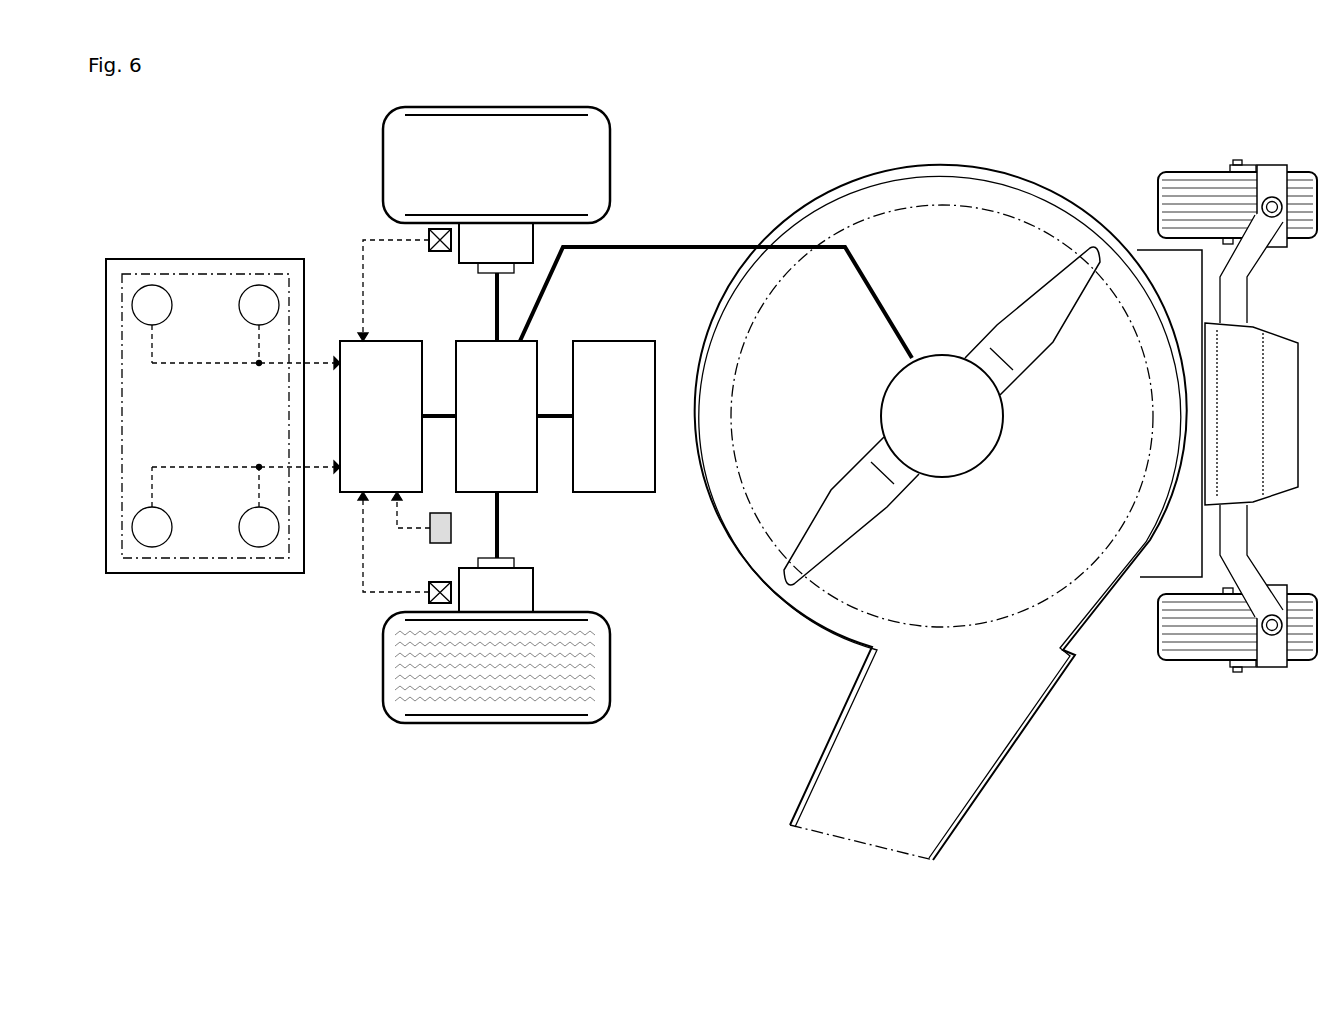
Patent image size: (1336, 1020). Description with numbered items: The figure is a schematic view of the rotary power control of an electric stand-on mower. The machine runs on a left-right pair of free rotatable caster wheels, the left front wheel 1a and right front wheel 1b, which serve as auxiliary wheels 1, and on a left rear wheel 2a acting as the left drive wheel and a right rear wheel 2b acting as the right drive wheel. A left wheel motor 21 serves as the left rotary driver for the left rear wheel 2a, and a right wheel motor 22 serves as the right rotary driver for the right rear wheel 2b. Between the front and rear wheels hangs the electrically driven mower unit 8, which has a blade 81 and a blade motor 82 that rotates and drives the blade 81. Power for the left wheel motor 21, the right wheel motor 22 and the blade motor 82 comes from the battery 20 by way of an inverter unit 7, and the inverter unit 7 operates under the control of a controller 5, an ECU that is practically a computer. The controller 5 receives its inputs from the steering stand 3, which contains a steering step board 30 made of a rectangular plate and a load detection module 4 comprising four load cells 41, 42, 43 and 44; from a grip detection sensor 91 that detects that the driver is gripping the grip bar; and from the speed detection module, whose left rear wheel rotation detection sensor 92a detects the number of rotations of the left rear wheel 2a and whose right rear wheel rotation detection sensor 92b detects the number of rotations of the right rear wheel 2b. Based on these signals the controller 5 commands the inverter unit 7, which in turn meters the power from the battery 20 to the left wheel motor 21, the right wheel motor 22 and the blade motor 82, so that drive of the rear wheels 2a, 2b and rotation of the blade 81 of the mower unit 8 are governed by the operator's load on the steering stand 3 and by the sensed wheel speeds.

The auxiliary wheels 1 is at (1227, 420).
The left front wheel 1a is at (1190, 172).
The right front wheel 1b is at (1195, 662).
The left rear wheel 2a is at (585, 107).
The right rear wheel 2b is at (588, 722).
The steering stand 3 is at (217, 415).
The load detection module 4 is at (205, 416).
The controller 5 is at (398, 341).
The inverter unit 7 is at (521, 492).
The mower unit 8 is at (1078, 694).
The battery 20 is at (630, 341).
The left wheel motor 21 is at (496, 282).
The right wheel motor 22 is at (496, 552).
The steering step board 30 is at (204, 259).
The load cell 41 is at (262, 288).
The load cell 42 is at (262, 545).
The load cell 43 is at (150, 288).
The load cell 44 is at (150, 545).
The blade 81 is at (1050, 285).
The blade motor 82 is at (942, 416).
The grip detection sensor 91 is at (435, 517).
The left rear wheel rotation detection sensor 92a is at (432, 253).
The right rear wheel rotation detection sensor 92b is at (432, 582).